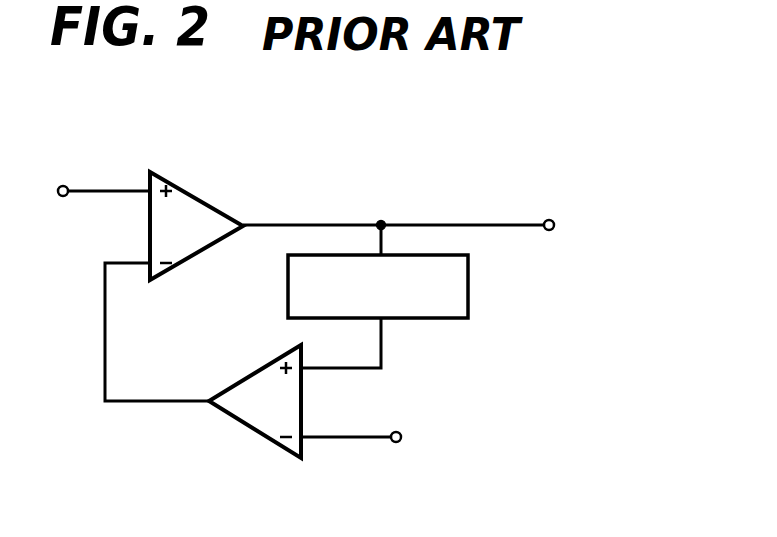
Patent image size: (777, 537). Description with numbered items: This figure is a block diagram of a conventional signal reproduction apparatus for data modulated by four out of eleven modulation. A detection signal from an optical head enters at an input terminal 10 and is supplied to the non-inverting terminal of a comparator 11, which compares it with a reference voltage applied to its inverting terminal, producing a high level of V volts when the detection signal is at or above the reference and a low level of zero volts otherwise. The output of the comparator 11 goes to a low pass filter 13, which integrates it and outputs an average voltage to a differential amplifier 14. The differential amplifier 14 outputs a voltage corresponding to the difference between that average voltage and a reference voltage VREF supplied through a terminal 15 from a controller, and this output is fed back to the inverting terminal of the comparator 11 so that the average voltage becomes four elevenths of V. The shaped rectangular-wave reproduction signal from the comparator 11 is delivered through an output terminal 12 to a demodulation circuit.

The input terminal 10 is at (63, 186).
The comparator 11 is at (196, 195).
The output terminal 12 is at (548, 219).
The low pass filter 13 is at (468, 287).
The differential amplifier 14 is at (251, 373).
The terminal 15 is at (396, 432).